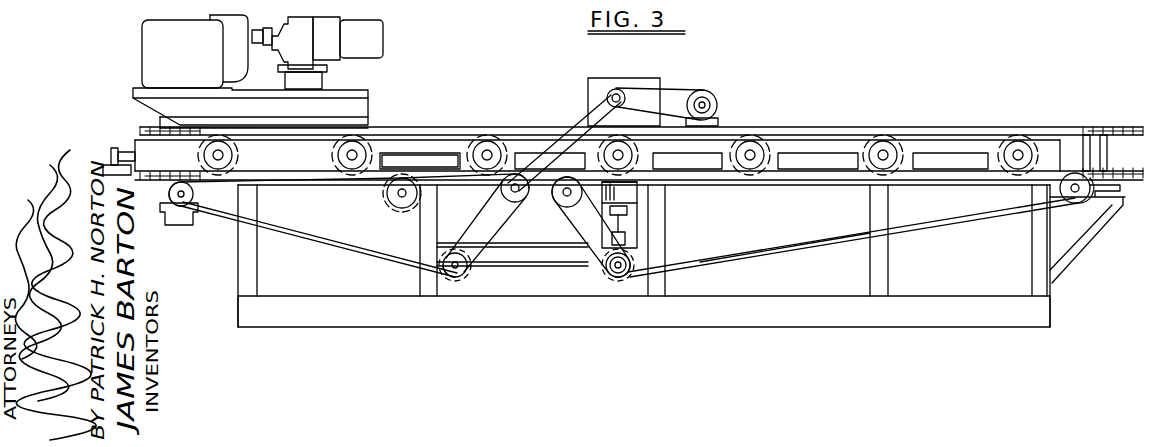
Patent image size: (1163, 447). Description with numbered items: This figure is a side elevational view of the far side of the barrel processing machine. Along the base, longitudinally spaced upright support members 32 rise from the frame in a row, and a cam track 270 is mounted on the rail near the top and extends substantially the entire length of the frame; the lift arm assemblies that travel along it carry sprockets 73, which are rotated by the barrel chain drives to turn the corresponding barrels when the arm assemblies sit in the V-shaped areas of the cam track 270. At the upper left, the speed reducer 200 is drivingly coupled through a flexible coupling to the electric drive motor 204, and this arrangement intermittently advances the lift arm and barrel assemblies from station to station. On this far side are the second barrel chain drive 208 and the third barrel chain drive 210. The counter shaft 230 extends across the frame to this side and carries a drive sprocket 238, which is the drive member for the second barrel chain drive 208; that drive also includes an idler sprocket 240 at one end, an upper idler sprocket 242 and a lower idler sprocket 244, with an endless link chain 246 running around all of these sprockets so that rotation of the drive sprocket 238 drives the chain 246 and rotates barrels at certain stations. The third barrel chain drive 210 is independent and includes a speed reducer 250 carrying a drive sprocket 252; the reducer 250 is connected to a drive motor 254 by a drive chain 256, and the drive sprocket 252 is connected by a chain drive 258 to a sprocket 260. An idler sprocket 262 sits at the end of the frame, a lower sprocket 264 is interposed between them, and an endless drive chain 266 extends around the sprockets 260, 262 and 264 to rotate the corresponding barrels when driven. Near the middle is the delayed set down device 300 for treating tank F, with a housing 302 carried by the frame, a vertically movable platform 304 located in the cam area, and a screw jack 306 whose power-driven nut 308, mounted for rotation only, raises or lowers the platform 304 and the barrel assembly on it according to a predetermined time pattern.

The upright support members 32 is at (258, 276).
The sprockets 73 is at (311, 160).
The speed reducer 200 is at (150, 60).
The electric drive motor 204 is at (370, 31).
The second barrel chain drive 208 is at (363, 266).
The third barrel chain drive 210 is at (781, 261).
The counter shaft 230 is at (510, 190).
The drive sprocket 238 is at (510, 205).
The idler sprocket 240 is at (185, 206).
The upper idler sprocket 242 is at (388, 194).
The lower idler sprocket 244 is at (470, 270).
The link chain 246 is at (410, 268).
The speed reducer 250 is at (595, 92).
The drive sprocket 252 is at (606, 98).
The drive motor 254 is at (720, 105).
The drive chain 256 is at (687, 90).
The chain drive 258 is at (577, 147).
The sprocket 260 is at (588, 185).
The idler sprocket 262 is at (1076, 200).
The lower sprocket 264 is at (621, 277).
The endless drive chain 266 is at (973, 224).
The cam track 270 is at (426, 142).
The delayed set down device 300 is at (645, 215).
The housing 302 is at (630, 234).
The vertically movable platform 304 is at (637, 185).
The screw jack 306 is at (624, 276).
The nut 308 is at (625, 240).